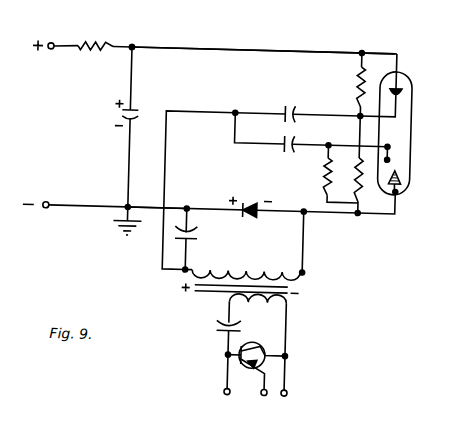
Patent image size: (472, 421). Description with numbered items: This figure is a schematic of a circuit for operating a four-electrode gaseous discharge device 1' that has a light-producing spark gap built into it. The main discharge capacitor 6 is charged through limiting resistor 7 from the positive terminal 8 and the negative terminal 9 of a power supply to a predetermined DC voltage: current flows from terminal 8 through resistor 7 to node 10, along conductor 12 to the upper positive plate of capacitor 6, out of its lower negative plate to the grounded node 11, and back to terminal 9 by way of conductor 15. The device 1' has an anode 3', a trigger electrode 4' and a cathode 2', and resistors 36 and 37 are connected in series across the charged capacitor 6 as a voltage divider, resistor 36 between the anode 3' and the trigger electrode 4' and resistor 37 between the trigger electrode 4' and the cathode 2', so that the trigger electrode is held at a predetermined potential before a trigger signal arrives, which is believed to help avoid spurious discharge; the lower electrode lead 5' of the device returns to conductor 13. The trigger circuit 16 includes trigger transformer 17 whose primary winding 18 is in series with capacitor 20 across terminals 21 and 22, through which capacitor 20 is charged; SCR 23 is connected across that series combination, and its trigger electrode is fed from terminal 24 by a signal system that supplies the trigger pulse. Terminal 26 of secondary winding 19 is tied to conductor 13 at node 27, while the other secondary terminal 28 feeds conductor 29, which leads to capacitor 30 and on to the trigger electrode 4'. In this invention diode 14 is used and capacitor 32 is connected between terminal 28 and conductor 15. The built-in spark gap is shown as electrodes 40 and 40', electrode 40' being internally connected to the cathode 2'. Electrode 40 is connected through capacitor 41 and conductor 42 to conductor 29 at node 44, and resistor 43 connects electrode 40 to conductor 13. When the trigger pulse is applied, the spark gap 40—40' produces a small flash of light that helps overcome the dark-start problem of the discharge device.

The positive terminal 8 is at (50, 45).
The limiting resistor 7 is at (91, 43).
The node 10 is at (131, 45).
The conductor 12 is at (255, 47).
The main discharge capacitor 6 is at (138, 110).
The negative terminal 9 is at (49, 204).
The node 11 is at (129, 205).
The conductor 15 is at (149, 206).
The conductor 29 is at (192, 110).
The node 44 is at (236, 109).
The capacitor 30 is at (286, 108).
The conductor 42 is at (235, 142).
The capacitor 41 is at (286, 146).
The resistor 36 is at (357, 83).
The four-electrode gaseous discharge device 1' is at (407, 134).
The anode 3' is at (410, 75).
The trigger electrode 4' is at (396, 101).
The electrode 40 is at (413, 144).
The electrode 40' is at (417, 159).
The cathode 2' is at (413, 181).
The cathode 5' is at (396, 201).
The resistor 43 is at (327, 163).
The resistor 37 is at (356, 188).
The conductor 13 is at (364, 210).
The node 27 is at (311, 210).
The diode 14 is at (252, 204).
The capacitor 32 is at (203, 233).
The terminal 28 is at (188, 268).
The secondary winding 19 is at (240, 270).
The terminal 26 is at (311, 268).
The trigger transformer 17 is at (292, 290).
The primary winding 18 is at (268, 300).
The capacitor 20 is at (224, 327).
The SCR 23 is at (233, 352).
The terminal 24 is at (270, 387).
The terminal 21 is at (233, 389).
The terminal 22 is at (297, 389).
The trigger circuit 16 is at (318, 338).